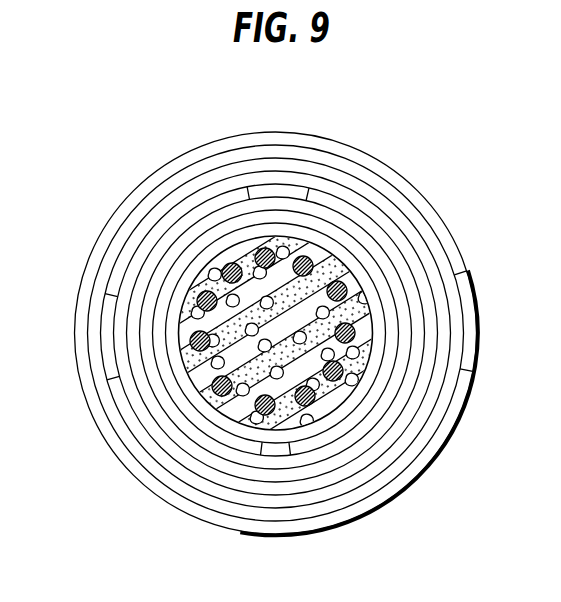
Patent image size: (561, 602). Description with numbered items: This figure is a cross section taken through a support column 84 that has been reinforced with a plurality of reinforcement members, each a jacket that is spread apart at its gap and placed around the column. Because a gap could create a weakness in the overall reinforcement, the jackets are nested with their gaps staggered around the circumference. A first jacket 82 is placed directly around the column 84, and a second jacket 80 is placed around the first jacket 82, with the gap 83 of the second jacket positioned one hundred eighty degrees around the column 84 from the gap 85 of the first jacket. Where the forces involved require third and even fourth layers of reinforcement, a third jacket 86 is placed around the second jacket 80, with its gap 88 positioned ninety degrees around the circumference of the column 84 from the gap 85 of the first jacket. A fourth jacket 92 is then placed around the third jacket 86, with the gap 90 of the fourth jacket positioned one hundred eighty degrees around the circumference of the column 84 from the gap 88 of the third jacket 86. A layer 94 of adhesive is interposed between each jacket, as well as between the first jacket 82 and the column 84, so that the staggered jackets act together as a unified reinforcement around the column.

The second jacket 80 is at (170, 242).
The first jacket 82 is at (173, 270).
The gap of the second jacket 83 is at (245, 189).
The column 84 is at (335, 265).
The gap of the first jacket 85 is at (278, 457).
The third jacket 86 is at (137, 435).
The gap of the third jacket 88 is at (103, 348).
The gap of the fourth jacket 90 is at (473, 333).
The fourth jacket 92 is at (437, 222).
The layer of adhesive 94 is at (337, 420).